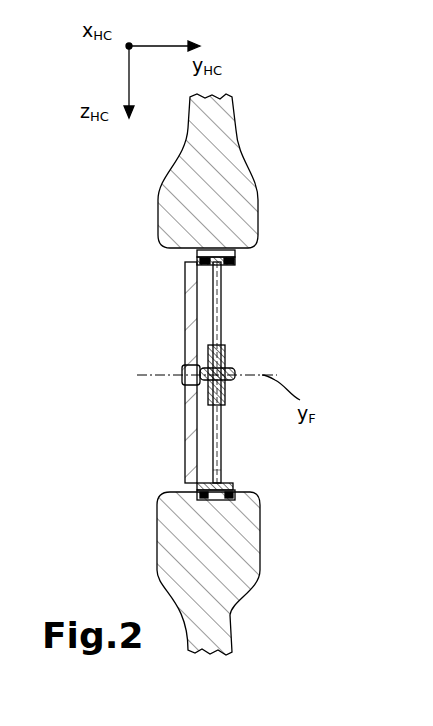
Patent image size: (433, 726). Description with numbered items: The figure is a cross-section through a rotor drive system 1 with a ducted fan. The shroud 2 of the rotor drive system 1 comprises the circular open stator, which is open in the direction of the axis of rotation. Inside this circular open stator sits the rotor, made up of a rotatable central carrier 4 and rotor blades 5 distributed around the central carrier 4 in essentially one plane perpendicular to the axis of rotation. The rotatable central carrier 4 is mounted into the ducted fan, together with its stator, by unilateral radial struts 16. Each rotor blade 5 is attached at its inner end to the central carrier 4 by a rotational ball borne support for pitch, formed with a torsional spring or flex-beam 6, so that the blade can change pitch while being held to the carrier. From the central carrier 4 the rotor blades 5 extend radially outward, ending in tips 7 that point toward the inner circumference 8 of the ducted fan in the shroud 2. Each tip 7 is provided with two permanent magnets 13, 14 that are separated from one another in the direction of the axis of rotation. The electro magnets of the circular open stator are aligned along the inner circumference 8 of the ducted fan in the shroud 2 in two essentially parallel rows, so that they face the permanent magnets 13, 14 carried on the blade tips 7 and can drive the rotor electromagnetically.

The rotor drive system 1 is at (100, 157).
The shroud 2 is at (243, 193).
The central carrier 4 is at (224, 362).
The rotor blade 5 is at (219, 300).
The flex-beam 6 is at (222, 398).
The tip 7 is at (216, 480).
The inner circumference 8 is at (237, 254).
The permanent magnet 13 is at (197, 487).
The permanent magnet 14 is at (234, 487).
The radial strut 16 is at (183, 332).